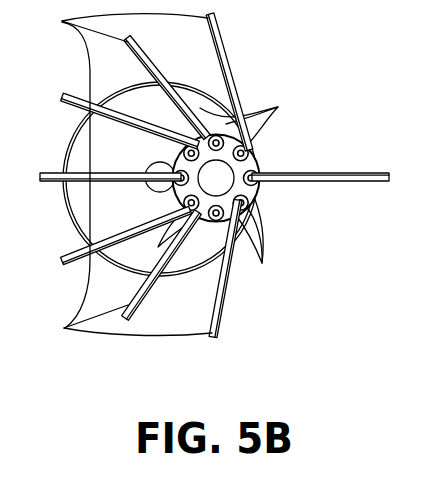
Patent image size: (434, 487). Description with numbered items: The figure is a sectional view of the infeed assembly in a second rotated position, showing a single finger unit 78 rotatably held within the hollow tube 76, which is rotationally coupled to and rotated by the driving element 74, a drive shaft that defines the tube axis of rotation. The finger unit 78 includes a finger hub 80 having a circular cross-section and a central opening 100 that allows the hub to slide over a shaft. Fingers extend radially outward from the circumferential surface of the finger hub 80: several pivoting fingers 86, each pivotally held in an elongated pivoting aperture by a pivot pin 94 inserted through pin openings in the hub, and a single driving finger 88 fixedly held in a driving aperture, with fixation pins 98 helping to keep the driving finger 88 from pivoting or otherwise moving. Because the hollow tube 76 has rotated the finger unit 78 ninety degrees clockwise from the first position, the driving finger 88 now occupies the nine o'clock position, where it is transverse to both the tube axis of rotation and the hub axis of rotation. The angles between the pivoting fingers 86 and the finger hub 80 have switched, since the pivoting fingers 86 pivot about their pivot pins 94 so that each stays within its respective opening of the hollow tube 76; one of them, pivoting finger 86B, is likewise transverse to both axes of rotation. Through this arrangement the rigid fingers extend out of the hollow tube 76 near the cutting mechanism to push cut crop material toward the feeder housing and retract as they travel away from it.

The driving element 74 is at (157, 202).
The hollow tube 76 is at (72, 218).
The finger unit 78 is at (210, 245).
The finger hub 80 is at (260, 164).
The pivoting finger 86 is at (121, 177).
The pivoting finger 86B is at (354, 182).
The driving finger 88 is at (57, 172).
The pivot pin 94 is at (278, 108).
The fixation pin 98 is at (163, 162).
The central opening 100 is at (197, 141).